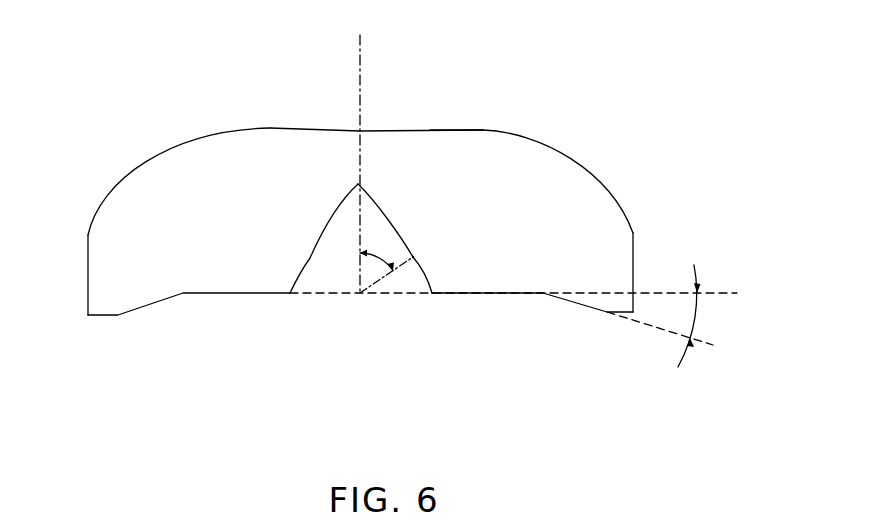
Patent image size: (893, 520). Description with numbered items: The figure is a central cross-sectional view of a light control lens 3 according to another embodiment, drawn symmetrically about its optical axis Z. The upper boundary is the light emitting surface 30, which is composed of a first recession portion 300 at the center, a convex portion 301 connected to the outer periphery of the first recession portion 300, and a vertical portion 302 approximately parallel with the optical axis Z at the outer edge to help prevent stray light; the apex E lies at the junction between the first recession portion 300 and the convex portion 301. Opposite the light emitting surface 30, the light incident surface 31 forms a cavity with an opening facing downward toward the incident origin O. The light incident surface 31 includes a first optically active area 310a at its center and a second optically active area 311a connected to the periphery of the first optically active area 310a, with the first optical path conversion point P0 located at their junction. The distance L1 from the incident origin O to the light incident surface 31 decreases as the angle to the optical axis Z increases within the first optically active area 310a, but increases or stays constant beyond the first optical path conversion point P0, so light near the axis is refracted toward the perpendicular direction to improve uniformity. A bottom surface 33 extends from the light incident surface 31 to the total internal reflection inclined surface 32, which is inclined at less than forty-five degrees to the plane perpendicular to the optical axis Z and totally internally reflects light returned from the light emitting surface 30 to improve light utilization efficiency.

The light control lens 3 is at (392, 215).
The light emitting surface 30 is at (155, 151).
The first recession portion 300 is at (415, 128).
The convex portion 301 is at (603, 174).
The vertical portion 302 is at (634, 244).
The light incident surface 31 is at (406, 235).
The first optically active area 310a is at (367, 178).
The second optically active area 311a is at (453, 275).
The total internal reflection inclined surface 32 is at (567, 300).
The bottom surface 33 is at (218, 293).
The apex E is at (453, 128).
The first optical path conversion point P0 is at (415, 256).
The distance from incident origin to light incident surface L1 is at (388, 275).
The optical axis Z is at (360, 150).
The incident origin O is at (513, 307).